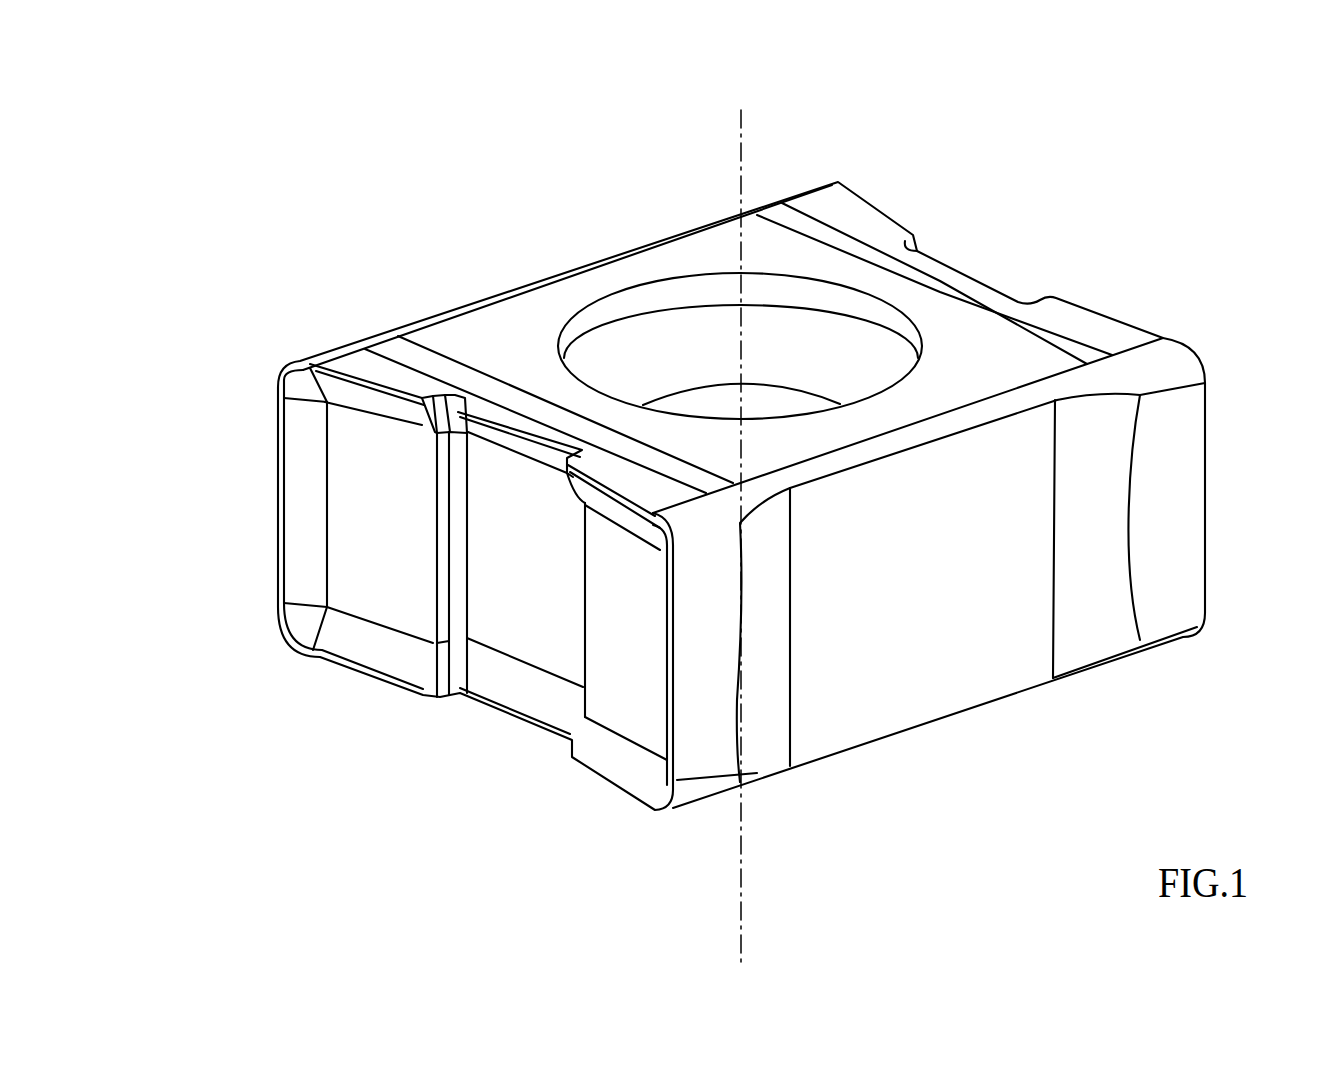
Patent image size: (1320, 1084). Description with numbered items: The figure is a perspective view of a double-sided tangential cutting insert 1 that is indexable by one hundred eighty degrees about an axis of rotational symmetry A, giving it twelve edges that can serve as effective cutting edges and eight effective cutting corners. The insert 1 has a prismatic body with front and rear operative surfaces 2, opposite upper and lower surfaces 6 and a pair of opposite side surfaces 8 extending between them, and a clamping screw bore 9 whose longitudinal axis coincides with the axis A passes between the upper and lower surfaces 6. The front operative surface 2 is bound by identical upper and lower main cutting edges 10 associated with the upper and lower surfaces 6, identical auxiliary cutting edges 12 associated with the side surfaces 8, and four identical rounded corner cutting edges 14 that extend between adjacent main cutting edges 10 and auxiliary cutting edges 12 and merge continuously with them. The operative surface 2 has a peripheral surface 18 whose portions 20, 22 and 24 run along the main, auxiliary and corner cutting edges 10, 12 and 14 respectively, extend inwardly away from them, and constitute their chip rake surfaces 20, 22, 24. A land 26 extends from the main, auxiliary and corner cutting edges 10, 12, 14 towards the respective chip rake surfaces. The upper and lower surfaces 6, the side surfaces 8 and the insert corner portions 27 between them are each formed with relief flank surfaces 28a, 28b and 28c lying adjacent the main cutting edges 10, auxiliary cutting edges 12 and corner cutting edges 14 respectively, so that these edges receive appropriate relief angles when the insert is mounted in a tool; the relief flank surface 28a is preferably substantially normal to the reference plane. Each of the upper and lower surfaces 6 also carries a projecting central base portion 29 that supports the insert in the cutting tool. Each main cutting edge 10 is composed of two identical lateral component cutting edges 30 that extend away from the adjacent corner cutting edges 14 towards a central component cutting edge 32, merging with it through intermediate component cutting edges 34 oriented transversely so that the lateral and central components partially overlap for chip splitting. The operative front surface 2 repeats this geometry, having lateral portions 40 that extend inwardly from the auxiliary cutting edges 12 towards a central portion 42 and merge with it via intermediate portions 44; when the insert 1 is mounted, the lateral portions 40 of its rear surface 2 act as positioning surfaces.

The cutting insert 1 is at (428, 182).
The front and rear operative surfaces 2 is at (1110, 301).
The upper and lower surfaces 6 is at (766, 248).
The side surfaces 8 is at (590, 231).
The clamping screw bore 9 is at (740, 346).
The axis of rotational symmetry A is at (745, 143).
The main cutting edges 10 is at (358, 677).
The auxiliary cutting edges 12 is at (277, 455).
The corner cutting edges 14 is at (287, 383).
The peripheral surface 18 is at (298, 551).
The chip rake surface of the main cutting edge 20 is at (345, 638).
The chip rake surface of the auxiliary cutting edge 22 is at (310, 500).
The chip rake surface of the corner cutting edge 24 is at (300, 387).
The land 26 is at (365, 383).
The insert corner portions 27 is at (703, 514).
The relief flank surface 28a is at (400, 373).
The relief flank surface 28b is at (693, 687).
The relief flank surface 28c is at (735, 528).
The projecting central base portion 29 is at (538, 300).
The lateral component cutting edges 30 is at (600, 785).
The central component cutting edge 32 is at (527, 718).
The intermediate component cutting edges 34 is at (447, 640).
The lateral portions 40 is at (521, 595).
The central portion 42 is at (446, 496).
The intermediate portions 44 is at (443, 590).